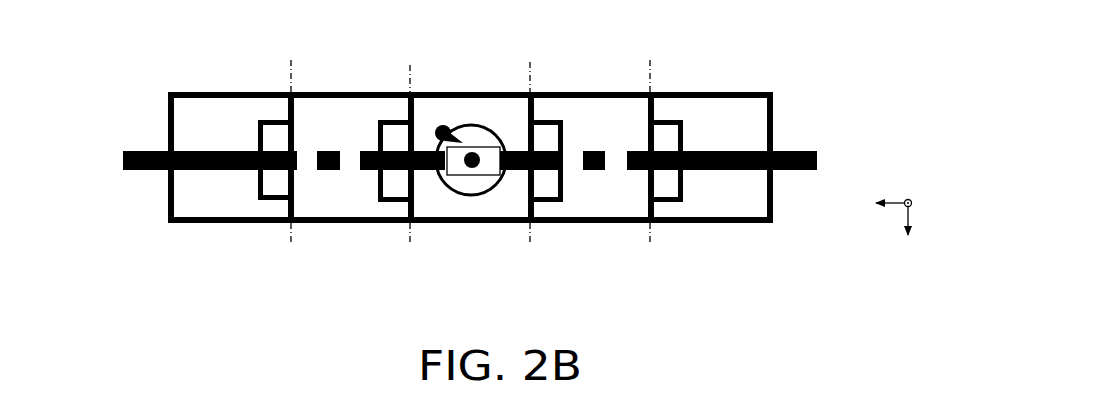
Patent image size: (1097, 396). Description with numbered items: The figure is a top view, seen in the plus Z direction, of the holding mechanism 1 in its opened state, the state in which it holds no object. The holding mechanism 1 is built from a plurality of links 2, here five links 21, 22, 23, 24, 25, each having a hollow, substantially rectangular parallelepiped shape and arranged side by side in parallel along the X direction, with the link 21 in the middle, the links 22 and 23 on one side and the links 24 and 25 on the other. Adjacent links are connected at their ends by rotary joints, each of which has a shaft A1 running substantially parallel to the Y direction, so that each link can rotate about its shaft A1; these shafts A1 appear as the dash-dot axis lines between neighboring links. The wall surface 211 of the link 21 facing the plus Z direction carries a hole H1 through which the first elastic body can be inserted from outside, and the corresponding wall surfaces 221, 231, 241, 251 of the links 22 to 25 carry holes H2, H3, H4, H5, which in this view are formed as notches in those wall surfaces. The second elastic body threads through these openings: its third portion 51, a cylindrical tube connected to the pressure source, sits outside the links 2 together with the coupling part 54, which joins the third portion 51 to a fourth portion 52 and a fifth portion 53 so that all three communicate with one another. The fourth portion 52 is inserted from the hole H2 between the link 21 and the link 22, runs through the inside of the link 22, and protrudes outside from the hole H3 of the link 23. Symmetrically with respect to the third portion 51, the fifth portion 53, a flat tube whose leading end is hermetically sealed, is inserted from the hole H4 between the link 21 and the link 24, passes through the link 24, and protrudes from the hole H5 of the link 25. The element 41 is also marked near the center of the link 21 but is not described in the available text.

The holding mechanism 1 is at (915, 112).
The links 2 is at (152, 108).
The link 21 is at (442, 222).
The wall surface 211 is at (493, 202).
The link 22 is at (318, 222).
The wall surface 221 is at (367, 202).
The link 23 is at (165, 195).
The wall surface 231 is at (243, 200).
The link 24 is at (580, 222).
The wall surface 241 is at (622, 202).
The link 25 is at (718, 222).
The wall surface 251 is at (745, 200).
The pin 41 is at (440, 128).
The third portion 51 is at (476, 150).
The fourth portion 52 is at (147, 150).
The fifth portion 53 is at (810, 150).
The coupling part 54 is at (500, 150).
The shaft A1 is at (408, 82).
The hole H1 is at (468, 192).
The hole H2 is at (398, 138).
The hole H3 is at (278, 138).
The hole H4 is at (542, 138).
The hole H5 is at (665, 138).